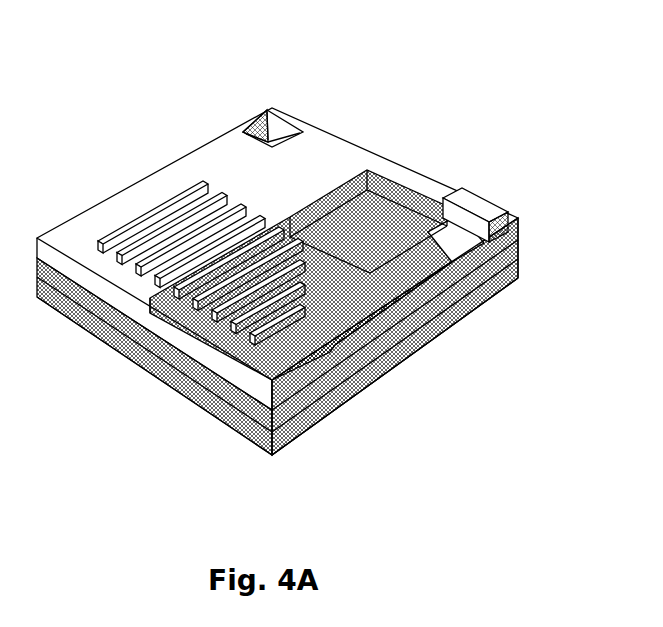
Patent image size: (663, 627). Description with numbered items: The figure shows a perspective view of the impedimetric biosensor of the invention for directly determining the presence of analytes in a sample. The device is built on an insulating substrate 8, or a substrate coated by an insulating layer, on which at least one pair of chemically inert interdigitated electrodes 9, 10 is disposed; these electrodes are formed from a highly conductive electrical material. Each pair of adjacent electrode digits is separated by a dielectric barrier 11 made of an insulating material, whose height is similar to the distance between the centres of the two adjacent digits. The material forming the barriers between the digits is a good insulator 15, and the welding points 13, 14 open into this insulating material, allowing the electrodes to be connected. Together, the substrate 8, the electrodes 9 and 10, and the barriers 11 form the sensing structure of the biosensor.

The insulating substrate 8 is at (422, 345).
The interdigitated electrode 9 is at (360, 390).
The interdigitated electrode 10 is at (212, 420).
The dielectric barrier 11 is at (120, 227).
The welding point 13 is at (493, 227).
The welding point 14 is at (360, 108).
The insulator 15 is at (243, 160).